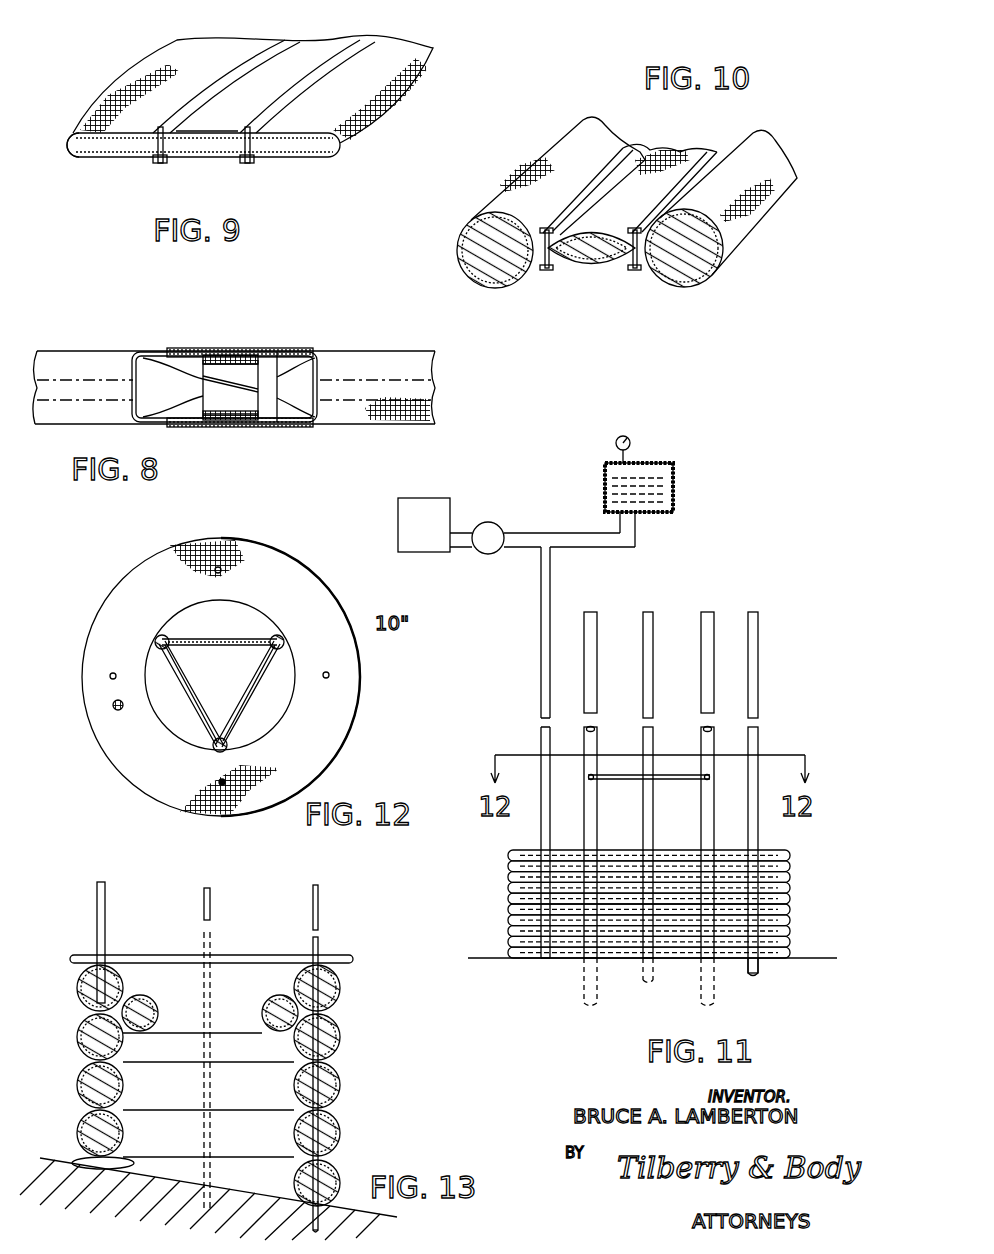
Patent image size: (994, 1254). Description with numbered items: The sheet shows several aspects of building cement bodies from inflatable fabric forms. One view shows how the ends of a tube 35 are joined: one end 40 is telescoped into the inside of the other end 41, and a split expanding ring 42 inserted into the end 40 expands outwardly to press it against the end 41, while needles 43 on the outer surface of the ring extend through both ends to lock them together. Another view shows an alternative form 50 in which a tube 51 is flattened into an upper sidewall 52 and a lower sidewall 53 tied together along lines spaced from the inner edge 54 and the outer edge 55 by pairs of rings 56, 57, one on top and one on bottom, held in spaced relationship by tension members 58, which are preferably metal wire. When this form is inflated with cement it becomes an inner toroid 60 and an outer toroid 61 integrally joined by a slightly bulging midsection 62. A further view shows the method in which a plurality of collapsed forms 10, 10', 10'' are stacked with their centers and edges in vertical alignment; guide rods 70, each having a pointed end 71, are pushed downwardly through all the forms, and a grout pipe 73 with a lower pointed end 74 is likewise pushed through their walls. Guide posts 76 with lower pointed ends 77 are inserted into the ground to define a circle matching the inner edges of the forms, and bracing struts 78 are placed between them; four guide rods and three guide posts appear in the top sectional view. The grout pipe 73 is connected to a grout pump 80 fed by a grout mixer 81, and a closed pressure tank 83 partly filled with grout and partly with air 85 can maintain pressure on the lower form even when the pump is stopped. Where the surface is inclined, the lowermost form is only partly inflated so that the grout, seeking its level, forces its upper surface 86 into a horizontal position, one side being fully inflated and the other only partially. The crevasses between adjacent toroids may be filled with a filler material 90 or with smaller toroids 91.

In FIG. 11, the form 10 is at (664, 958).
In FIG. 13, the form 10 is at (347, 1174).
In FIG. 11, the form 10' is at (678, 921).
In FIG. 13, the form 10' is at (346, 1133).
In FIG. 11, the form 10'' is at (676, 894).
In FIG. 13, the form 10'' is at (348, 1085).
In FIG. 8, the tube 35 is at (132, 343).
In FIG. 8, the tube end 40 is at (273, 428).
In FIG. 8, the tube end 41 is at (166, 348).
In FIG. 8, the split expanding ring 42 is at (257, 367).
In FIG. 8, the needles 43 is at (227, 348).
In FIG. 10, the form 50 is at (765, 126).
In FIG. 9, the tube 51 is at (383, 60).
In FIG. 10, the tube 51 is at (765, 218).
In FIG. 9, the upper sidewall 52 is at (207, 133).
In FIG. 10, the upper sidewall 52 is at (590, 232).
In FIG. 9, the lower sidewall 53 is at (196, 157).
In FIG. 10, the lower sidewall 53 is at (577, 263).
In FIG. 9, the inner edge 54 is at (342, 148).
In FIG. 9, the outer edge 55 is at (70, 146).
In FIG. 9, the rings 56 is at (322, 62).
In FIG. 10, the rings 56 is at (688, 180).
In FIG. 9, the rings 57 is at (161, 163).
In FIG. 10, the rings 57 is at (550, 268).
In FIG. 9, the tension members 58 is at (152, 160).
In FIG. 10, the tension members 58 is at (634, 230).
In FIG. 10, the inner toroid 60 is at (693, 284).
In FIG. 10, the outer toroid 61 is at (495, 284).
In FIG. 10, the midsection 62 is at (567, 264).
In FIG. 12, the guide rods 70 is at (221, 568).
In FIG. 11, the guide rods 70 is at (648, 640).
In FIG. 13, the guide rods 70 is at (212, 908).
In FIG. 11, the pointed end 71 is at (655, 980).
In FIG. 13, the pointed end 71 is at (313, 1230).
In FIG. 12, the grout pipe 73 is at (116, 710).
In FIG. 11, the grout pipe 73 is at (538, 628).
In FIG. 13, the grout pipe 73 is at (104, 900).
In FIG. 11, the lower pointed end 74 is at (548, 959).
In FIG. 13, the lower pointed end 74 is at (73, 1002).
In FIG. 12, the guide posts 76 is at (280, 640).
In FIG. 11, the guide posts 76 is at (593, 640).
In FIG. 11, the lower pointed ends 77 is at (593, 1003).
In FIG. 12, the bracing struts 78 is at (253, 697).
In FIG. 11, the bracing struts 78 is at (672, 780).
In FIG. 11, the grout pump 80 is at (493, 523).
In FIG. 11, the grout mixer 81 is at (428, 498).
In FIG. 11, the closed pressure tank 83 is at (673, 470).
In FIG. 11, the air 85 is at (610, 476).
In FIG. 13, the upper surface 86 is at (173, 1157).
In FIG. 13, the filler material 90 is at (302, 1110).
In FIG. 13, the smaller toroids 91 is at (223, 1002).